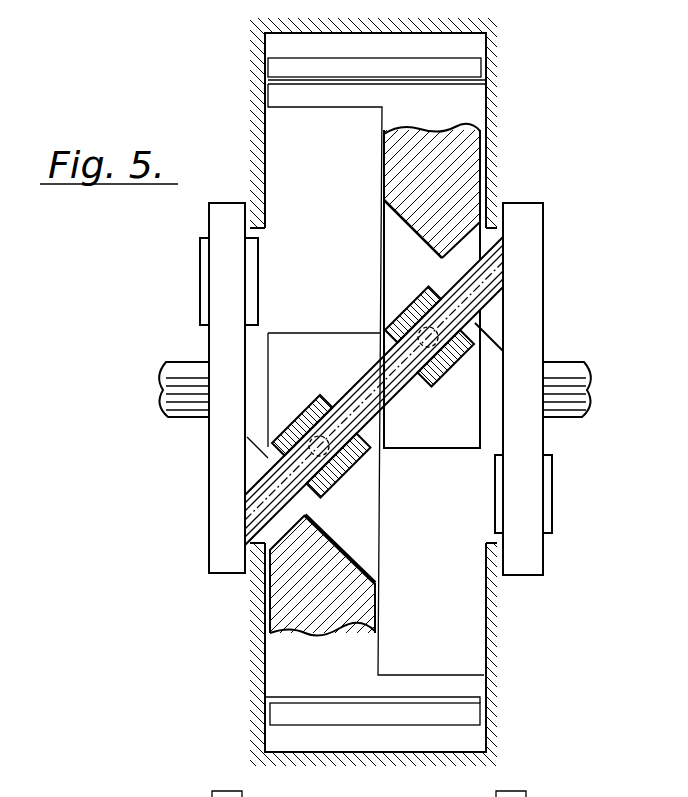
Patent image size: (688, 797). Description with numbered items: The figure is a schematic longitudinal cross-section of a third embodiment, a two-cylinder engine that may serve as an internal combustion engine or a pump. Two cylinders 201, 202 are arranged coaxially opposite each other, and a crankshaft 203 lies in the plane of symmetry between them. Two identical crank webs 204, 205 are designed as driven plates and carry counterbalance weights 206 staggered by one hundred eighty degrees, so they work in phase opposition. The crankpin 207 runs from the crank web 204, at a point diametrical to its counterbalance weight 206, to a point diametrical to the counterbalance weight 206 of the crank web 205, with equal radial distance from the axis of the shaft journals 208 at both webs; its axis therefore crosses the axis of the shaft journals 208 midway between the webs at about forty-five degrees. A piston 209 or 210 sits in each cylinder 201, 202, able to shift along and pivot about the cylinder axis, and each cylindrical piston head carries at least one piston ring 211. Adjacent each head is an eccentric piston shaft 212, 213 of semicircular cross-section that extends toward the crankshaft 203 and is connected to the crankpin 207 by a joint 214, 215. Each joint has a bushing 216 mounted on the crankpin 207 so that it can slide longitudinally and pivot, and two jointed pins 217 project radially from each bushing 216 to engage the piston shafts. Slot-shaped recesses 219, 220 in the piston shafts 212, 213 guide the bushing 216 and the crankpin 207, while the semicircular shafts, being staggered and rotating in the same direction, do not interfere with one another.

The cylinder 201 is at (472, 46).
The cylinder 202 is at (463, 748).
The crankshaft 203 is at (559, 337).
The crank web 204 is at (220, 483).
The crank web 205 is at (527, 262).
The counterbalance weight 206 is at (205, 282).
The crankpin 207 is at (387, 390).
The shaft journal 208 is at (182, 370).
The piston 209 is at (283, 68).
The piston 210 is at (473, 713).
The piston ring 211 is at (455, 83).
The piston shaft 212 is at (467, 163).
The piston shaft 213 is at (293, 603).
The joint 214 is at (406, 302).
The joint 215 is at (359, 474).
The bushing 216 is at (297, 428).
The jointed pin 217 is at (333, 432).
The recess 219 is at (416, 237).
The recess 220 is at (350, 553).